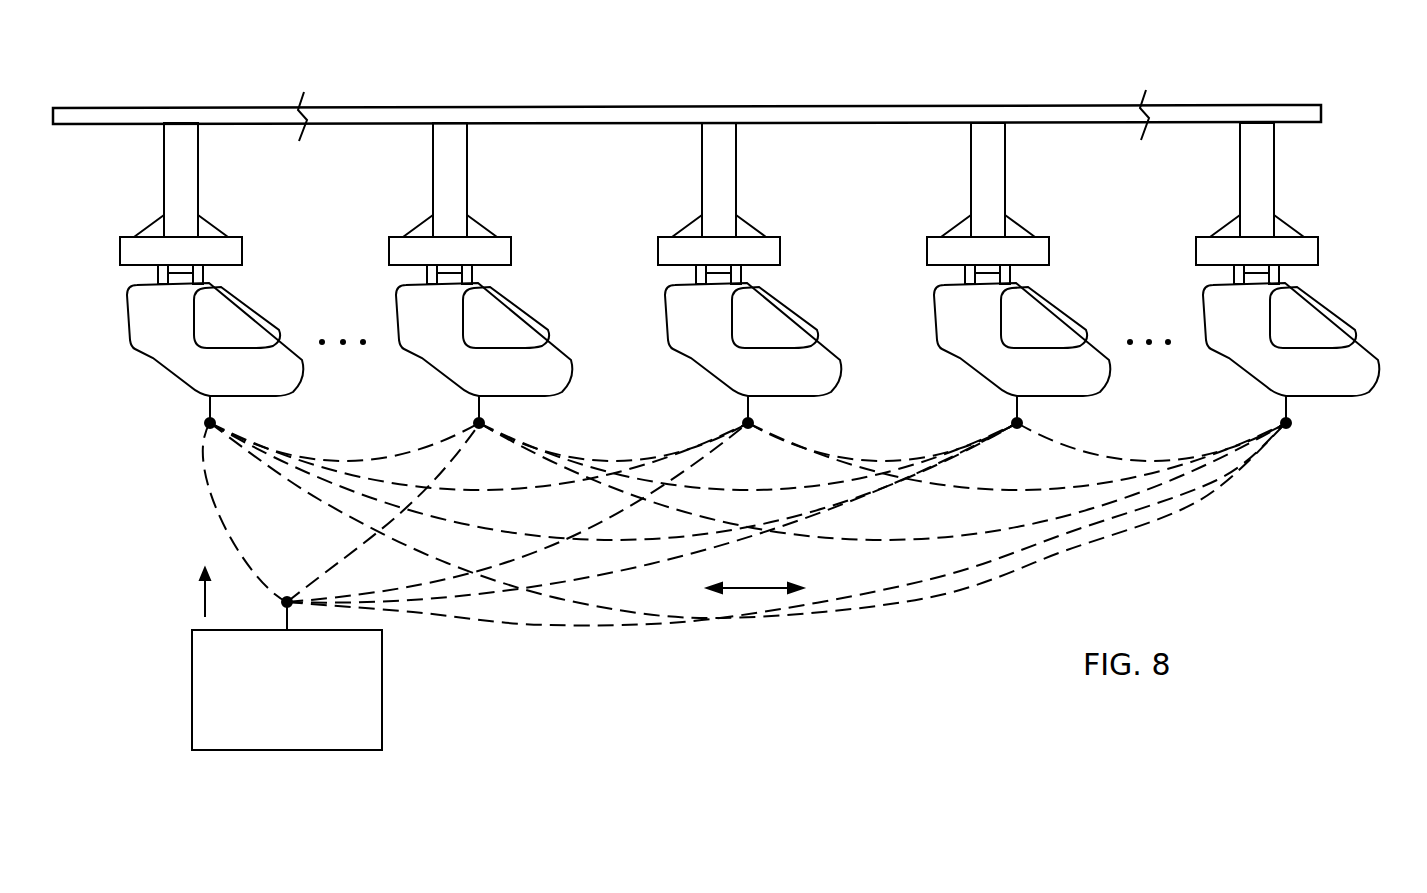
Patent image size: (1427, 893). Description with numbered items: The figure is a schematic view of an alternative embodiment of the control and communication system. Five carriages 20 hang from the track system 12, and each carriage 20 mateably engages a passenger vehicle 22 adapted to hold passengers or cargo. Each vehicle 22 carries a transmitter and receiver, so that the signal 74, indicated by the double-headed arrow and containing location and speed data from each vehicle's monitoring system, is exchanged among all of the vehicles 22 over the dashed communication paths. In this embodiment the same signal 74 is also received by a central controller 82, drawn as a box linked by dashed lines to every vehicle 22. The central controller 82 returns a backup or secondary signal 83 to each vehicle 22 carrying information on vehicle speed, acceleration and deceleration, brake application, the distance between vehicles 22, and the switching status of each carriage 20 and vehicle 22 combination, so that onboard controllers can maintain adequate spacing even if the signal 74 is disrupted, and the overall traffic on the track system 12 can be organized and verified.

The track system 12 is at (345, 108).
The carriage 20 is at (199, 155).
The passenger vehicle 22 is at (267, 302).
The signal 74 is at (760, 586).
The central controller 82 is at (382, 670).
The secondary signal 83 is at (203, 600).